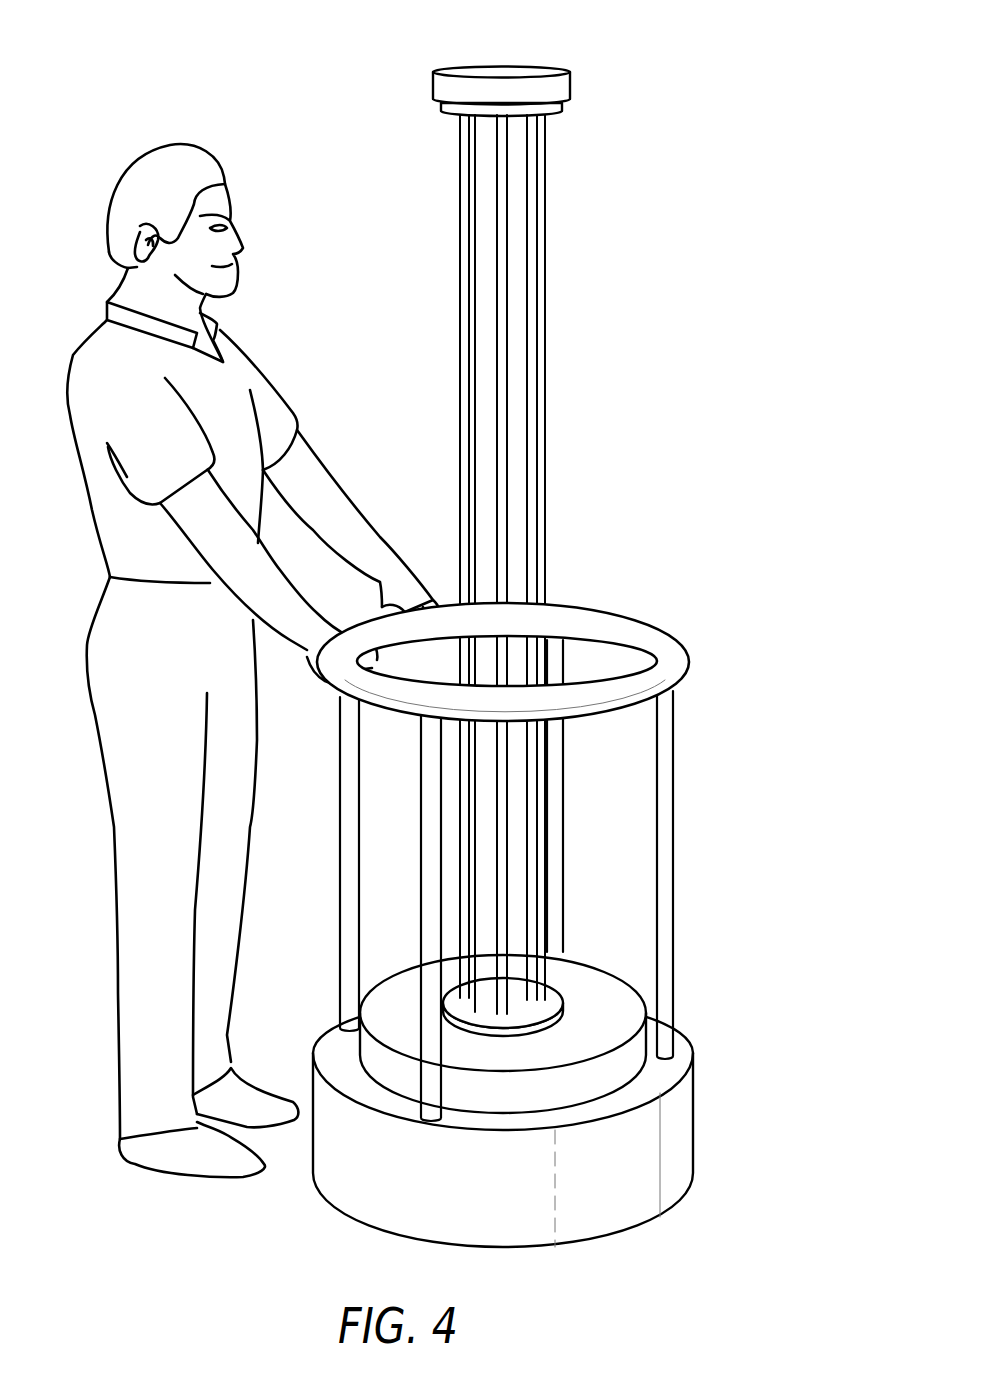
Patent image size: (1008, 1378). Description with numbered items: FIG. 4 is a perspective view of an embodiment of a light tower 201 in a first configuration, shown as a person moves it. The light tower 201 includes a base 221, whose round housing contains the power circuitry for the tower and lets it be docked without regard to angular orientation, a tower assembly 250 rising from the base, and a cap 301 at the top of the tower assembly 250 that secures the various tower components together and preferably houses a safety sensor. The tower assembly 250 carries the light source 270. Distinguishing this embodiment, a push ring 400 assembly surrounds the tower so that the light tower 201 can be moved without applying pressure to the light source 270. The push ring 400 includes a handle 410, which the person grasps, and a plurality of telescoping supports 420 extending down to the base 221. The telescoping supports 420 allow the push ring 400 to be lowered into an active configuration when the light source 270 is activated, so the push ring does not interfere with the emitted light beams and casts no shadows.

The light tower 201 is at (555, 628).
The cap 301 is at (571, 86).
The light source 270 is at (515, 323).
The tower assembly 250 is at (550, 575).
The push ring 400 is at (538, 847).
The handle 410 is at (702, 660).
The telescoping supports 420 is at (422, 916).
The base 221 is at (708, 1058).